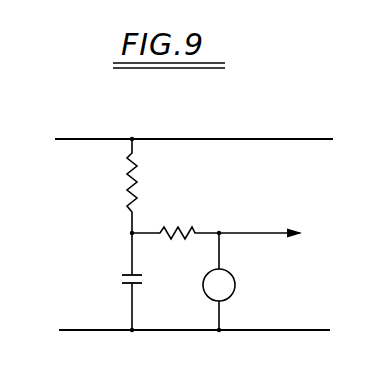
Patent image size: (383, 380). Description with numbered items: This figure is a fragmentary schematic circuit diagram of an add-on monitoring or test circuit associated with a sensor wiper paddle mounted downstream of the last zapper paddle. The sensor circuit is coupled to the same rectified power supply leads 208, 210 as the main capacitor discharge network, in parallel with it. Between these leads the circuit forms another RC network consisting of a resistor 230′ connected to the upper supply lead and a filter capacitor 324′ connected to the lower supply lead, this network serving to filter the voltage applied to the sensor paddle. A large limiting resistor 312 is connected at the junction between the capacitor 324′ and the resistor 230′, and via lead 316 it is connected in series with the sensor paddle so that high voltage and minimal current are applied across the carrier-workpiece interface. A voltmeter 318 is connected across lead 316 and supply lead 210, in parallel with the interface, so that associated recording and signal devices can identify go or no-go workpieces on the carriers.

The rectified power supply lead 208 is at (97, 138).
The rectified power supply lead 210 is at (92, 331).
The resistor 230′ is at (139, 180).
The limiting resistor 312 is at (182, 225).
The lead 316 is at (255, 232).
The voltmeter 318 is at (235, 283).
The capacitor 324′ is at (122, 285).